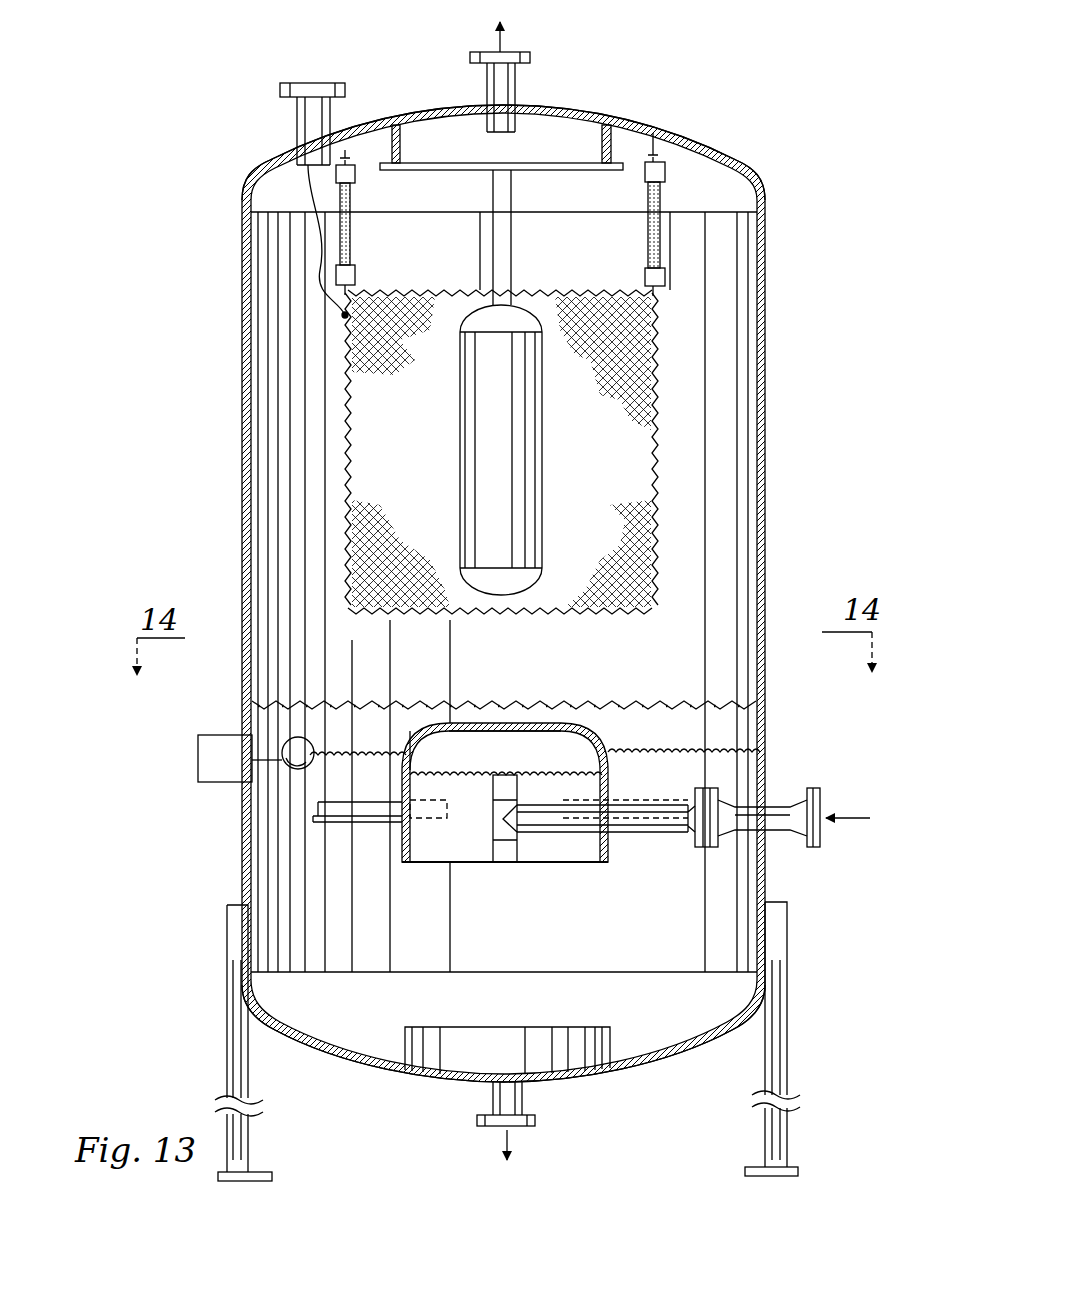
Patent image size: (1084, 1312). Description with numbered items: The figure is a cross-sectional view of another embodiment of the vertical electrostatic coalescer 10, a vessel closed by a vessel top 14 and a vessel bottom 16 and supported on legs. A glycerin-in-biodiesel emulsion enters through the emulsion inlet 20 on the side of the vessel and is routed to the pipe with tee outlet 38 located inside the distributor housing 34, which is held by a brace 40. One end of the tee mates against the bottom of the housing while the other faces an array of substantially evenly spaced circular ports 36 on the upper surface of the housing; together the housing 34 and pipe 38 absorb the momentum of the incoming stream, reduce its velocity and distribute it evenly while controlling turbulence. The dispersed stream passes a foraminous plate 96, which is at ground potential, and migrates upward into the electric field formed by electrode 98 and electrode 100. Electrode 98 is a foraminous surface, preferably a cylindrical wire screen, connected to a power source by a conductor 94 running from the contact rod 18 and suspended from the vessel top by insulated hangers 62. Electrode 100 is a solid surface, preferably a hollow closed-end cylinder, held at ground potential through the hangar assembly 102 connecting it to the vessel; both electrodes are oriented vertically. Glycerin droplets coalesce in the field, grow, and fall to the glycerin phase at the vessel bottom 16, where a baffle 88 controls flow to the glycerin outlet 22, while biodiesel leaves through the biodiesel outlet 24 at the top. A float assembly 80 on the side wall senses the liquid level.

The electrostatic coalescer 10 is at (208, 208).
The vessel top 14 is at (372, 117).
The vessel bottom 16 is at (385, 1065).
The contact rod 18 is at (280, 90).
The emulsion inlet 20 is at (815, 790).
The glycerin outlet 22 is at (537, 1118).
The biodiesel outlet 24 is at (535, 57).
The distributor housing 34 is at (500, 726).
The port 36 is at (553, 728).
The pipe with tee outlet 38 is at (555, 840).
The brace 40 is at (355, 822).
The insulated hanger 62 is at (665, 190).
The float assembly 80 is at (298, 768).
The baffle 88 is at (578, 1035).
The conductor 94 is at (318, 260).
The foraminous plate 96 is at (690, 705).
The electrode 98 is at (345, 415).
The electrode 100 is at (468, 462).
The hangar assembly 102 is at (512, 250).